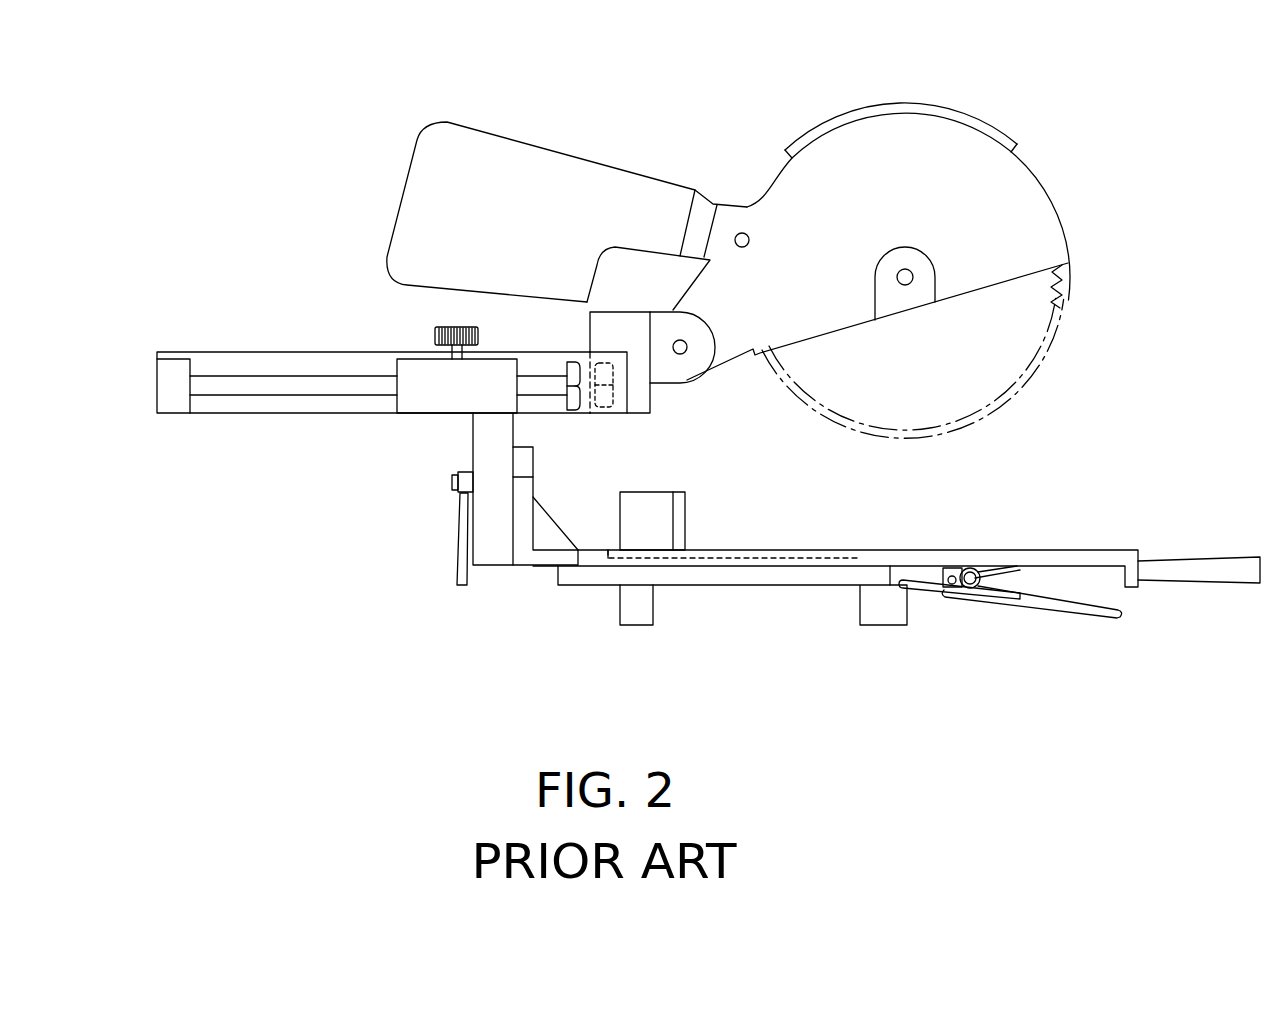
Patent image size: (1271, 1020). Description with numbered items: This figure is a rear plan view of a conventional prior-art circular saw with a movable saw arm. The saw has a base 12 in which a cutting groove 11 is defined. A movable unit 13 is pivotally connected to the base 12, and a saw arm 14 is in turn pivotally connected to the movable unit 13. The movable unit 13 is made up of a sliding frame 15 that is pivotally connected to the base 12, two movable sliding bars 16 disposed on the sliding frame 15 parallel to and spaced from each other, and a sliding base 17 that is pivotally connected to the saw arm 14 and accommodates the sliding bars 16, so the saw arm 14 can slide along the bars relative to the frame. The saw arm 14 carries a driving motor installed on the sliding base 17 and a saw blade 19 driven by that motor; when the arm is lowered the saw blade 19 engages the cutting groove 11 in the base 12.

The cutting groove 11 is at (752, 559).
The base 12 is at (856, 563).
The movable unit 13 is at (334, 370).
The saw arm 14 is at (1003, 107).
The sliding frame 15 is at (433, 397).
The movable sliding bars 16 is at (260, 387).
The sliding base 17 is at (168, 385).
The saw blade 19 is at (1017, 335).